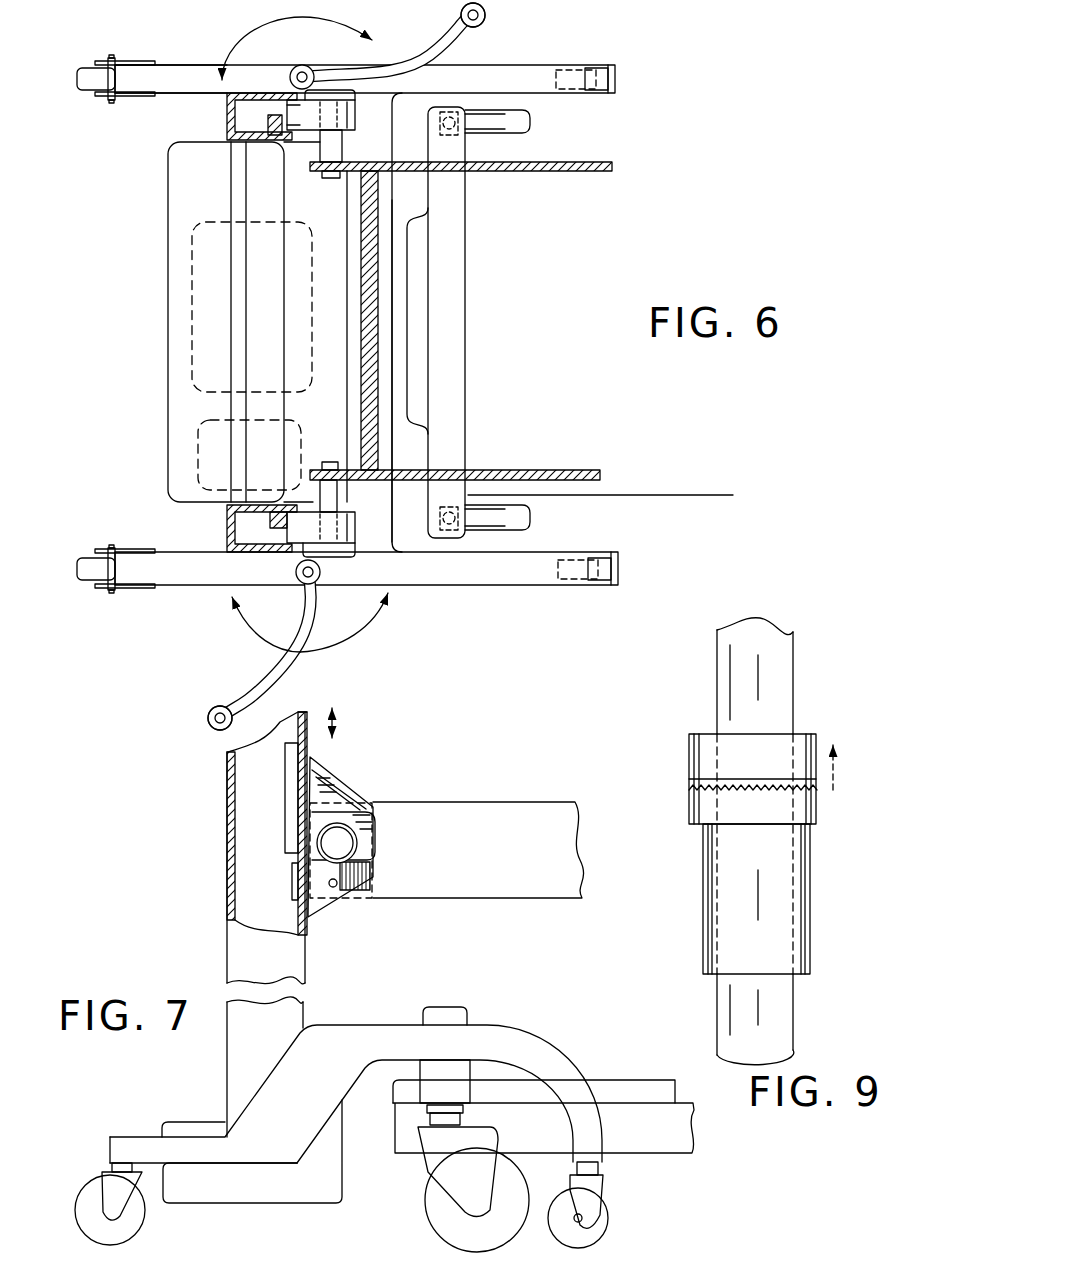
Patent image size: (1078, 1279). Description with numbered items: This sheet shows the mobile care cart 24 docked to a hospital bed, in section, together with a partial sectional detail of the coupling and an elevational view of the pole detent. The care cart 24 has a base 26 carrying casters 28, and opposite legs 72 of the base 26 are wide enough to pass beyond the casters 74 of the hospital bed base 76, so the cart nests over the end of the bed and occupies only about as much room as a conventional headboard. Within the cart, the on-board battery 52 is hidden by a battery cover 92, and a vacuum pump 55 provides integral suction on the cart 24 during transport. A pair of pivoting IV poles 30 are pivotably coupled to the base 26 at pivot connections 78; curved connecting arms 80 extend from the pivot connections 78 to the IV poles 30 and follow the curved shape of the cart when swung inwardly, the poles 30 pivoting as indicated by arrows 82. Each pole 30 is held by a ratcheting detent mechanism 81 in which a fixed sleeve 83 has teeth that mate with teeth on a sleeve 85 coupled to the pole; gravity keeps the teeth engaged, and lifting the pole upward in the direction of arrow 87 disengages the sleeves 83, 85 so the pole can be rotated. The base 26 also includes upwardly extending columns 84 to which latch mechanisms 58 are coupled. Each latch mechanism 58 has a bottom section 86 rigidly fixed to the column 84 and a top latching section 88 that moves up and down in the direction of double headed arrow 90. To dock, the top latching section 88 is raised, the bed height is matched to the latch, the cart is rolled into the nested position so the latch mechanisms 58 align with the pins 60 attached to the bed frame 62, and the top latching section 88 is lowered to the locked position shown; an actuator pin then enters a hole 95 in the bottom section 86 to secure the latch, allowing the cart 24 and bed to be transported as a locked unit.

In FIG. 6, the care cart 24 is at (82, 42).
In FIG. 7, the care cart 24 is at (115, 868).
In FIG. 6, the base 26 is at (165, 52).
In FIG. 6, the casters 28 is at (93, 572).
In FIG. 7, the casters 28 is at (88, 1205).
In FIG. 6, the pivoting IV poles 30 is at (486, 15).
In FIG. 9, the pivoting IV poles 30 is at (768, 678).
In FIG. 6, the on-board battery 52 is at (193, 298).
In FIG. 6, the vacuum pump 55 is at (197, 458).
In FIG. 6, the latch mechanisms 58 is at (364, 102).
In FIG. 7, the latch mechanisms 58 is at (360, 774).
In FIG. 6, the pins 60 is at (330, 148).
In FIG. 7, the pins 60 is at (345, 848).
In FIG. 6, the frame 62 is at (568, 173).
In FIG. 7, the frame 62 is at (520, 822).
In FIG. 6, the legs 72 is at (542, 72).
In FIG. 7, the legs 72 is at (542, 1062).
In FIG. 6, the casters 74 is at (531, 122).
In FIG. 7, the casters 74 is at (440, 1218).
In FIG. 6, the hospital bed base 76 is at (448, 365).
In FIG. 6, the pivot connections 78 is at (320, 580).
In FIG. 6, the connecting arms 80 is at (452, 45).
In FIG. 9, the ratcheting detent mechanism 81 is at (660, 757).
In FIG. 6, the arrows 82 is at (228, 50).
In FIG. 9, the fixed sleeve 83 is at (814, 813).
In FIG. 6, the columns 84 is at (226, 117).
In FIG. 7, the columns 84 is at (232, 842).
In FIG. 9, the sleeve 85 is at (712, 745).
In FIG. 7, the bottom section 86 is at (358, 880).
In FIG. 9, the arrow 87 is at (835, 765).
In FIG. 7, the top latching section 88 is at (374, 811).
In FIG. 7, the double headed arrow 90 is at (340, 723).
In FIG. 6, the battery cover 92 is at (182, 405).
In FIG. 7, the hole 95 is at (334, 888).